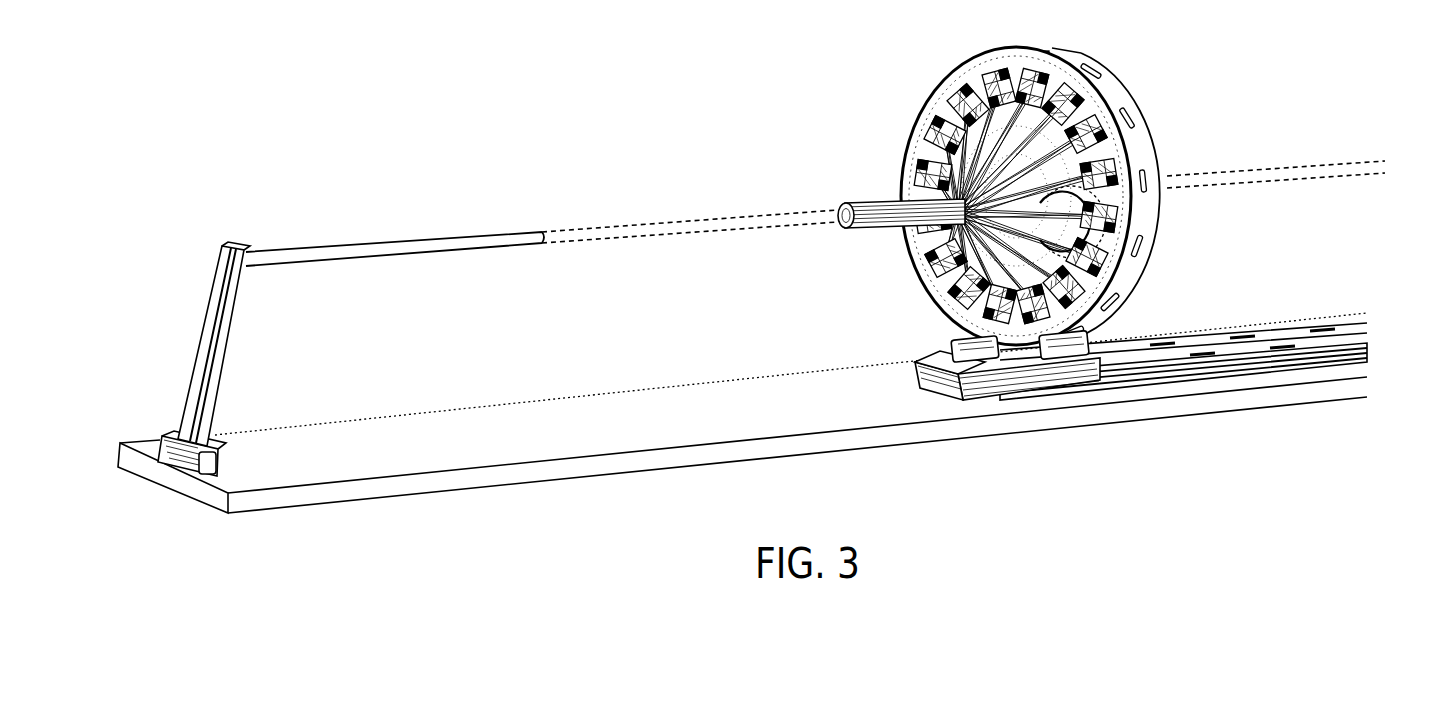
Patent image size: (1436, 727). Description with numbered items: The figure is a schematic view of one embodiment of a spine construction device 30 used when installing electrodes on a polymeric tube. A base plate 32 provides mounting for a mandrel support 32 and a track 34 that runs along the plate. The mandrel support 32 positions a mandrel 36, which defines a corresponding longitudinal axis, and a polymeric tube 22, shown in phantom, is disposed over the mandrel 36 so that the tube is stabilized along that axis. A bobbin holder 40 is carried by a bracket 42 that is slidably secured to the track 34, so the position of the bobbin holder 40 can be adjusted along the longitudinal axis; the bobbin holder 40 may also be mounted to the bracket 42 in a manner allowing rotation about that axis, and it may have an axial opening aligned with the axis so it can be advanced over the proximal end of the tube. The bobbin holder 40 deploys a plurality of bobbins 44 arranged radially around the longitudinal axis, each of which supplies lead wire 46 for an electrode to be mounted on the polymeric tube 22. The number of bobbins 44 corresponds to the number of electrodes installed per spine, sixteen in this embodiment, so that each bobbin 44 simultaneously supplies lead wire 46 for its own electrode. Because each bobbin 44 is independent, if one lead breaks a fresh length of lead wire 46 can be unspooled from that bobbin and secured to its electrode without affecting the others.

The spine construction device 30 is at (486, 100).
The base plate / mandrel support 32 is at (228, 357).
The track 34 is at (1175, 335).
The mandrel 36 is at (287, 252).
The polymeric tube 22 is at (635, 225).
The bobbin holder 40 is at (1078, 55).
The bracket 42 is at (1067, 380).
The bobbins 44 is at (985, 51).
The lead wire 46 is at (895, 192).